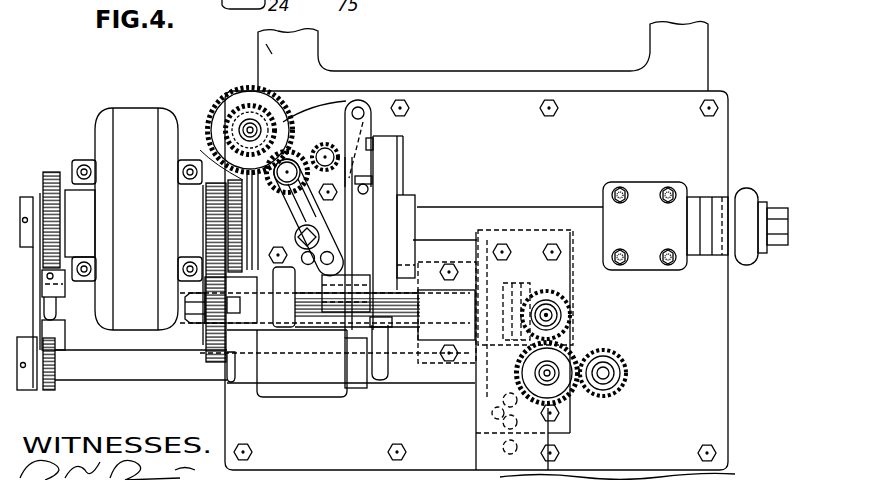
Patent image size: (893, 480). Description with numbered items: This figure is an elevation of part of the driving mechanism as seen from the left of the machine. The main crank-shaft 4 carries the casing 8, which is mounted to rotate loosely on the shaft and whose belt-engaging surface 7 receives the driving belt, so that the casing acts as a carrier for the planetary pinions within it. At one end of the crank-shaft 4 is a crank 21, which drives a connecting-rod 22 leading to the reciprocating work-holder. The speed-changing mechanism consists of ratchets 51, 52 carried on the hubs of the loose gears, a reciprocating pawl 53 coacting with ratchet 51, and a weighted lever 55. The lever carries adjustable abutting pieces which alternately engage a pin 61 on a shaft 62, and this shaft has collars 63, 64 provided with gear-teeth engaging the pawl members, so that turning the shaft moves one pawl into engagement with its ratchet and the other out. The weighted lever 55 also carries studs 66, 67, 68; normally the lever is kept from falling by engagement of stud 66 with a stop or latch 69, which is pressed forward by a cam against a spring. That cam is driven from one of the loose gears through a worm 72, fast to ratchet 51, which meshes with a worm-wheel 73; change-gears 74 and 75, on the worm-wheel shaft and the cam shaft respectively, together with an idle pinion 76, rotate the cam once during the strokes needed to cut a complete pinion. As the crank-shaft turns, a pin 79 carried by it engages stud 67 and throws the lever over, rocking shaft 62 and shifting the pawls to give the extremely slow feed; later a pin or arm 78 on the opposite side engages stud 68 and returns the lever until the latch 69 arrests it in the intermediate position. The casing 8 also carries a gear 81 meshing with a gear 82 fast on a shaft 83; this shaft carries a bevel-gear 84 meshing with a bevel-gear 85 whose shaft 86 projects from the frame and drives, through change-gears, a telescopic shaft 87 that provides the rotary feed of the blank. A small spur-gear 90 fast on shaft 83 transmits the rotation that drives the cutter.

The main crank-shaft 4 is at (513, 210).
The belt-engaging surface 7 is at (134, 118).
The casing 8 is at (168, 122).
The crank 21 is at (712, 212).
The connecting-rod 22 is at (746, 202).
The ratchet 51 is at (50, 305).
The ratchet 52 is at (51, 172).
The pawl 53 is at (236, 368).
The weighted lever 55 is at (392, 170).
The pin 61 is at (386, 345).
The shaft 62 is at (82, 383).
The collar 63 is at (232, 390).
The collar 64 is at (52, 367).
The stud 66 is at (374, 140).
The stud 67 is at (368, 178).
The stud 68 is at (413, 263).
The stop or latch 69 is at (360, 132).
The worm 72 is at (243, 233).
The worm-wheel 73 is at (232, 100).
The change-gear 74 is at (258, 118).
The change-gear 75 is at (323, 150).
The idle pinion 76 is at (289, 155).
The pin or arm 78 is at (417, 255).
The pin 79 is at (369, 188).
The gear 81 is at (212, 216).
The gear 82 is at (205, 347).
The shaft 83 is at (310, 314).
The bevel-gear 84 is at (523, 290).
The bevel-gear 85 is at (572, 288).
The shaft 86 is at (574, 304).
The telescopic shaft 87 is at (603, 390).
The spur-gear 90 is at (488, 230).